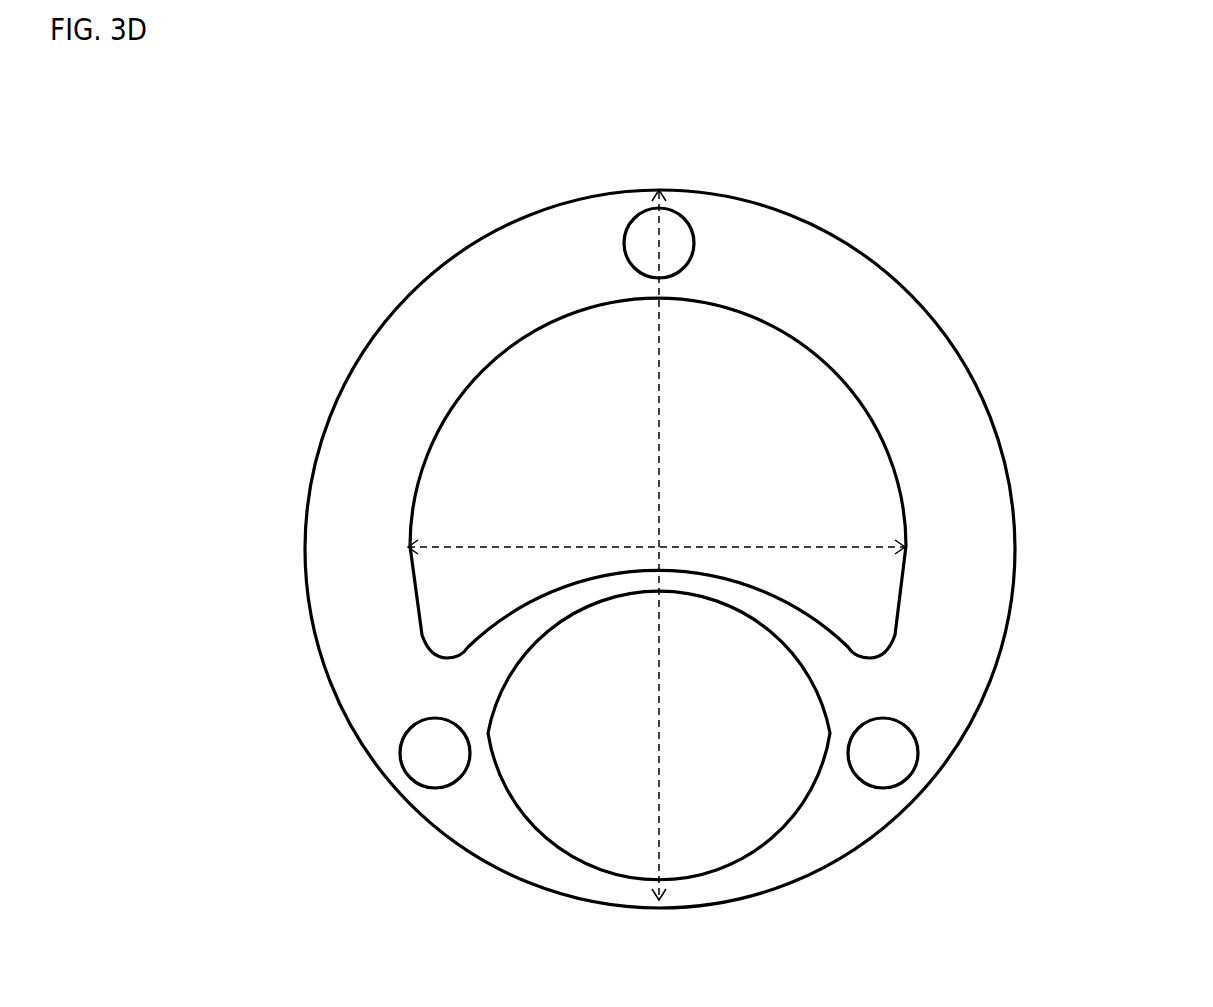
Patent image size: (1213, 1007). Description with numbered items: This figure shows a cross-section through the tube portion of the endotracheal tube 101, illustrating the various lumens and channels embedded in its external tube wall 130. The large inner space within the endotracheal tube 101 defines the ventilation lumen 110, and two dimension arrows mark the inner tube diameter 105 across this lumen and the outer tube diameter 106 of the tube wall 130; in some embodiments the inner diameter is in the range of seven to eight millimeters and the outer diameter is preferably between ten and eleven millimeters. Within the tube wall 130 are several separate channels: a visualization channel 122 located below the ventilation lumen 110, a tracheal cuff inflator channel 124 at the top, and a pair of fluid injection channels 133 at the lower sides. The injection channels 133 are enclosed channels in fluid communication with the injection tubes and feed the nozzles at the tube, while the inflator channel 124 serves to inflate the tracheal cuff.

The endotracheal tube 101 is at (357, 353).
The tube wall 130 is at (925, 360).
The ventilation lumen 110 is at (810, 422).
The outer tube diameter 106 is at (663, 357).
The inner tube diameter 105 is at (860, 549).
The tracheal cuff inflator channel 124 is at (646, 243).
The injection channels 133 is at (445, 755).
The visualization channel 122 is at (607, 787).